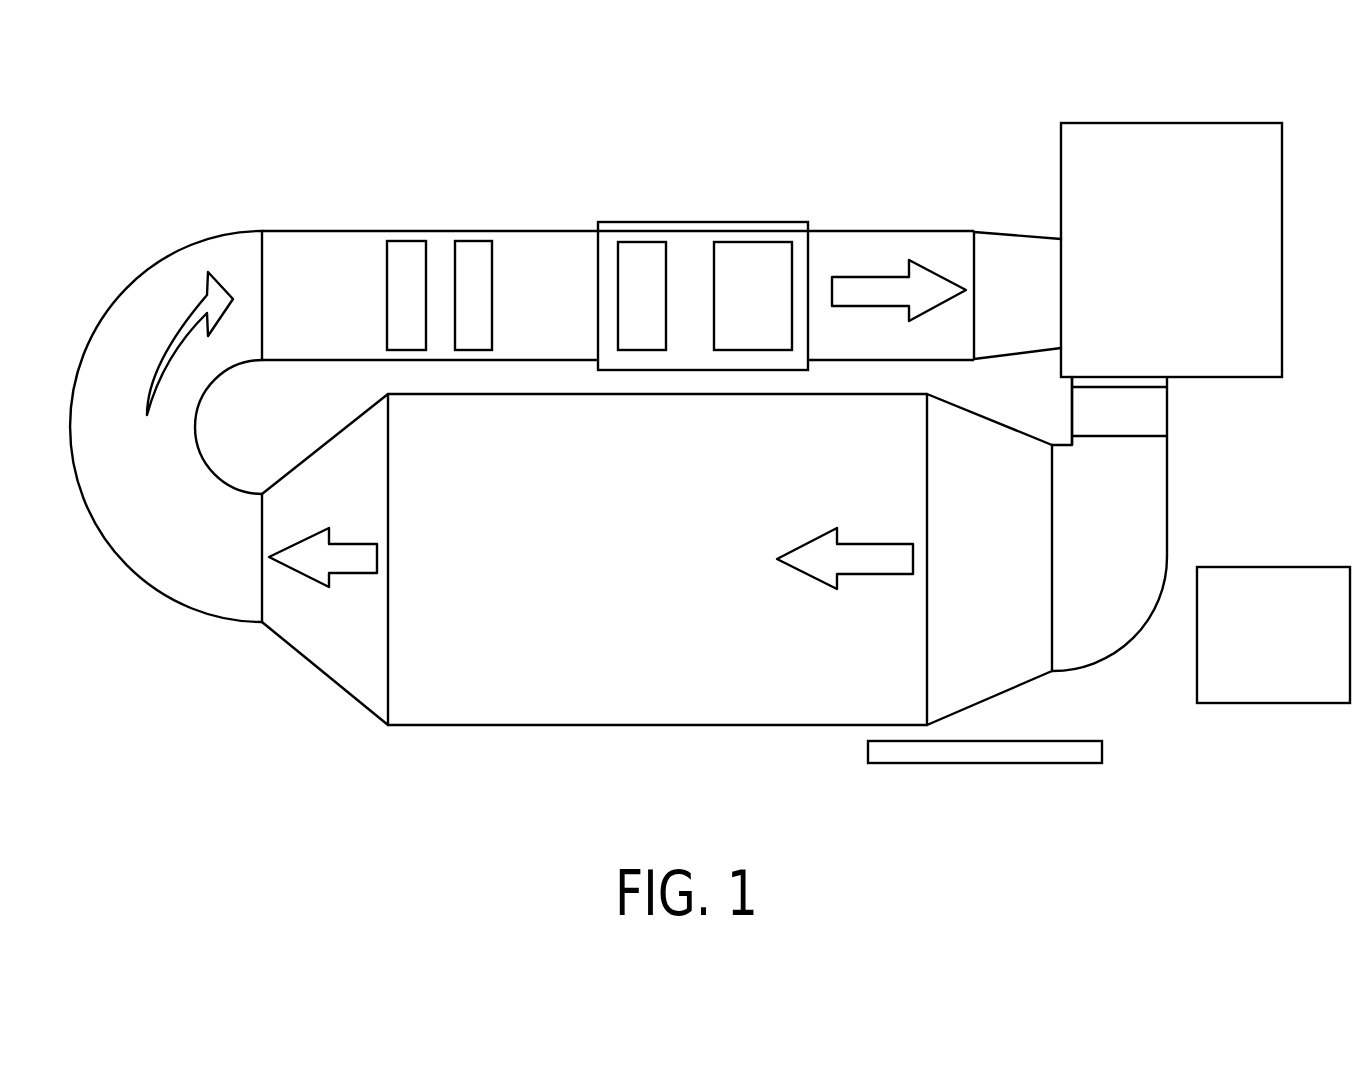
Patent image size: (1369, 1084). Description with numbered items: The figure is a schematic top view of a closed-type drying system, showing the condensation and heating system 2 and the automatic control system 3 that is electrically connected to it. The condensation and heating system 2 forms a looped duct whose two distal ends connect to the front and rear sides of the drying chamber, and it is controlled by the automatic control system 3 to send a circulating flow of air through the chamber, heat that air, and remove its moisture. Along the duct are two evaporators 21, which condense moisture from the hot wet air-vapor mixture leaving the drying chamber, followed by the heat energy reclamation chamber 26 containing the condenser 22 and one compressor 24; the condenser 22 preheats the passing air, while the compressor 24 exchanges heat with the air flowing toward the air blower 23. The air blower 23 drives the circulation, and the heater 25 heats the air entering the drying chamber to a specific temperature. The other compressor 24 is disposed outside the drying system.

The condensation and heating system 2 is at (547, 244).
The evaporators 21 is at (473, 253).
The condenser 22 is at (647, 265).
The air blower 23 is at (1163, 145).
The compressors 24 is at (767, 258).
The heater 25 is at (1158, 420).
The heat energy reclamation chamber 26 is at (695, 262).
The automatic control system 3 is at (1018, 752).